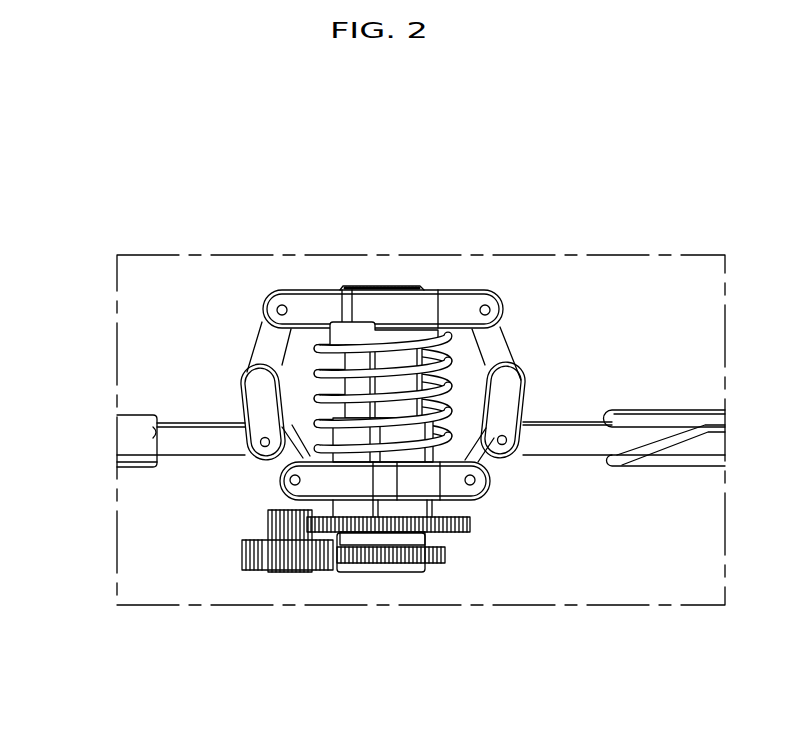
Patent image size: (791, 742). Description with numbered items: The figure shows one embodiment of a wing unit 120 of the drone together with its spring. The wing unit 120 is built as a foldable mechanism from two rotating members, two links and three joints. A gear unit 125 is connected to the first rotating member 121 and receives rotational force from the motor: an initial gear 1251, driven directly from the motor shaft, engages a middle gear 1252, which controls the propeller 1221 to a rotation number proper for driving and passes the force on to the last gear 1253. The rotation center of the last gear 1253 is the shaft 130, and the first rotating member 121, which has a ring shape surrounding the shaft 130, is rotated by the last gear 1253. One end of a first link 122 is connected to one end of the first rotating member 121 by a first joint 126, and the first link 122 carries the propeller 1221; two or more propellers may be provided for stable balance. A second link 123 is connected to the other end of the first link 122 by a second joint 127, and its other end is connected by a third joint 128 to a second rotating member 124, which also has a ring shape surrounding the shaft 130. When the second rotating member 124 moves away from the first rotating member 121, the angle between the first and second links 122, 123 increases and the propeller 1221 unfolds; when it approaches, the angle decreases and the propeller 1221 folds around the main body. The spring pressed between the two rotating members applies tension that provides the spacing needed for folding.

The wing unit 120 is at (152, 181).
The first rotating member 121 is at (458, 490).
The first link 122 is at (272, 463).
The second link 123 is at (258, 385).
The second rotating member 124 is at (317, 302).
The gear unit 125 is at (356, 607).
The initial gear 1251 is at (405, 556).
The middle gear 1252 is at (290, 570).
The last gear 1253 is at (355, 546).
The first joint 126 is at (292, 483).
The second joint 127 is at (262, 445).
The third joint 128 is at (282, 305).
The shaft 130 is at (392, 372).
The propeller 1221 is at (137, 436).